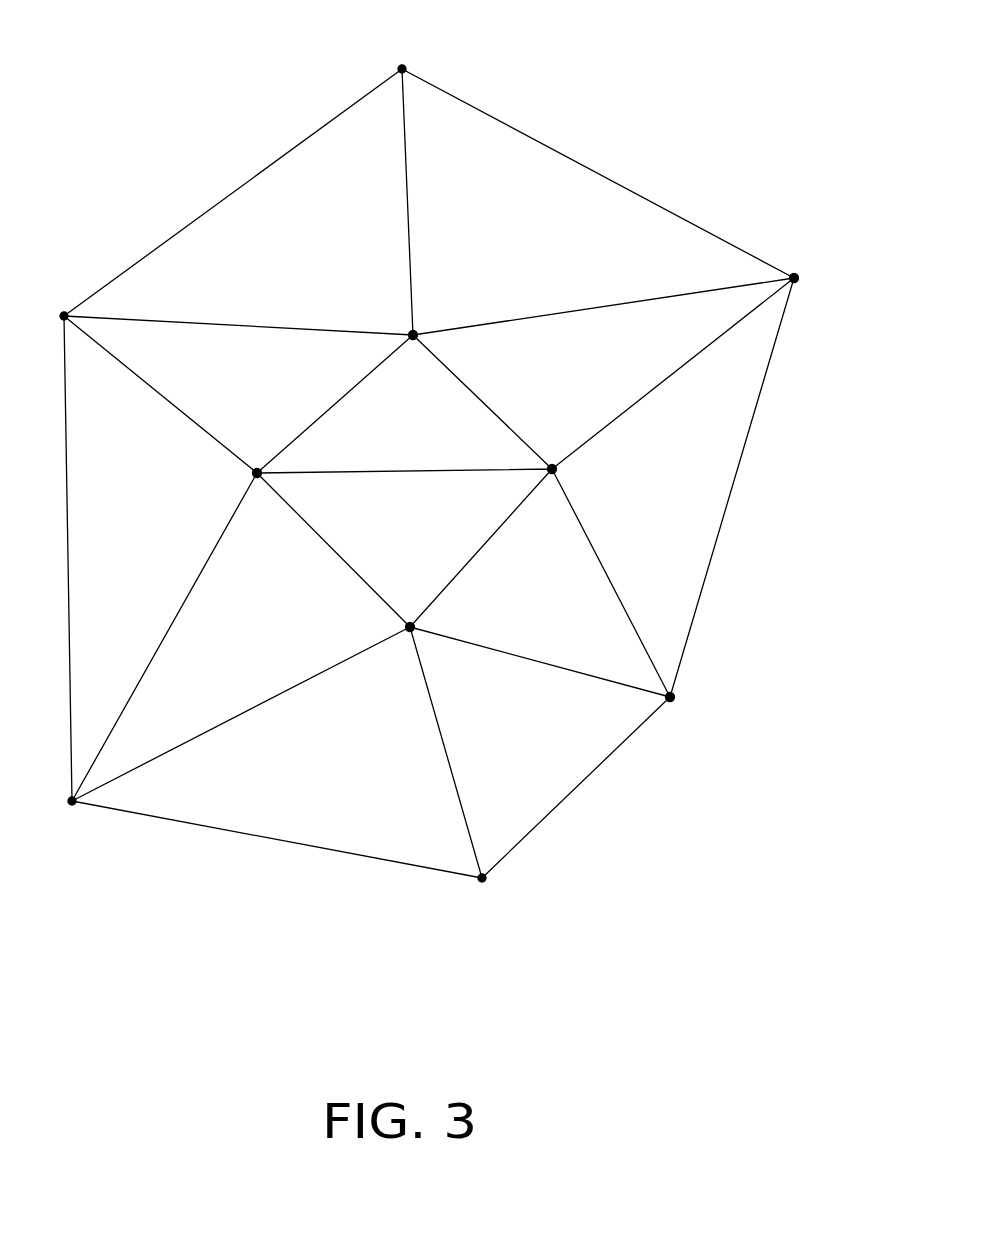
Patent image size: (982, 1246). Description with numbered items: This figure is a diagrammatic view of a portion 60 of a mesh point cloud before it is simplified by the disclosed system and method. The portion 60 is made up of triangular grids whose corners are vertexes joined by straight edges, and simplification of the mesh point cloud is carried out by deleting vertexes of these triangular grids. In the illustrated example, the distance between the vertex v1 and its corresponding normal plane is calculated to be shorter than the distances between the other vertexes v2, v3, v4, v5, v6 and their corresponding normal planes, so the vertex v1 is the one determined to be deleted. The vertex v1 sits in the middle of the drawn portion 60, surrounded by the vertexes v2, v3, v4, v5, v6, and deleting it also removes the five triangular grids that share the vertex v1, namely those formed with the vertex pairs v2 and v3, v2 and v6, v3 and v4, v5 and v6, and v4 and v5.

The portion of the mesh point cloud 60 is at (602, 73).
The vertex v1 is at (578, 472).
The vertex v2 is at (232, 476).
The vertex v3 is at (432, 316).
The vertex v4 is at (812, 265).
The vertex v5 is at (692, 687).
The vertex v6 is at (386, 625).